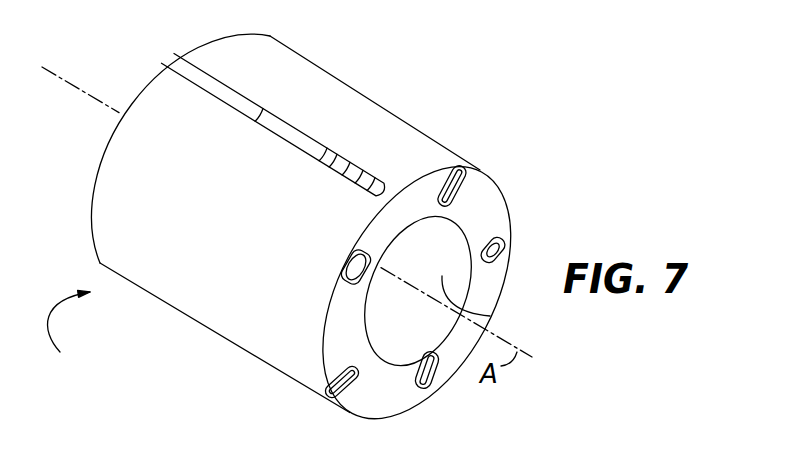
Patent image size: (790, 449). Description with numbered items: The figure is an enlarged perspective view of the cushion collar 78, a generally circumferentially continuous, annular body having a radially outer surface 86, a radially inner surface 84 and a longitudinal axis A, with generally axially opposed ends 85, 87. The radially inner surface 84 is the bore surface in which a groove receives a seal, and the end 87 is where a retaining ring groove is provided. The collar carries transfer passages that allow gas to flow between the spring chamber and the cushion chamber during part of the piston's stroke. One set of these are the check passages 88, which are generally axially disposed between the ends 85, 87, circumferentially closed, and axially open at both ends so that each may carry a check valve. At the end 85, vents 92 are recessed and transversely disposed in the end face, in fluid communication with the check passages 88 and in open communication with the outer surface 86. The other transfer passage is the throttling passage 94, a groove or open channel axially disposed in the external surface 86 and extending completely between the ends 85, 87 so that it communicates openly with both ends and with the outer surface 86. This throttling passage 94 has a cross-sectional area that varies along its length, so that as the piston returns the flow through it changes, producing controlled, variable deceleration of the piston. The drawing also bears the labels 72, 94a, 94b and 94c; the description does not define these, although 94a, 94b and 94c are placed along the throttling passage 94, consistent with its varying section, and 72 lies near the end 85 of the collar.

The slotted tab 72 is at (333, 396).
The cushion collar 78 is at (69, 337).
The radially inner surface 84 is at (490, 316).
The end 85 is at (493, 203).
The radially outer surface 86 is at (222, 337).
The end 87 is at (106, 134).
The check passages 88 is at (465, 168).
The vents 92 is at (508, 250).
The throttling passage 94 is at (291, 126).
The first slot section 94a is at (220, 82).
The second slot section 94b is at (326, 148).
The ribbed slot section 94c is at (389, 188).